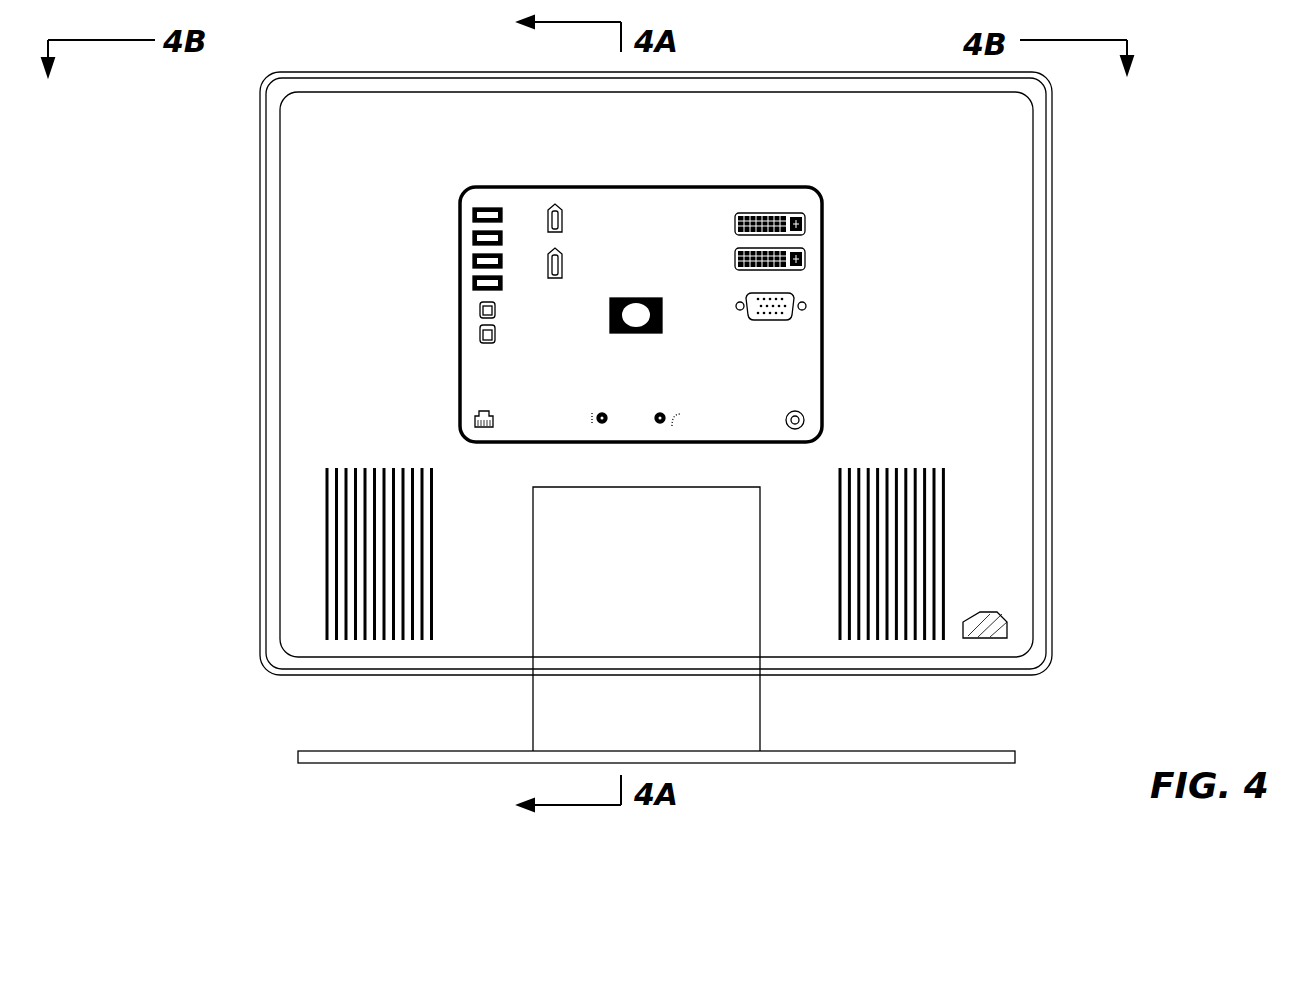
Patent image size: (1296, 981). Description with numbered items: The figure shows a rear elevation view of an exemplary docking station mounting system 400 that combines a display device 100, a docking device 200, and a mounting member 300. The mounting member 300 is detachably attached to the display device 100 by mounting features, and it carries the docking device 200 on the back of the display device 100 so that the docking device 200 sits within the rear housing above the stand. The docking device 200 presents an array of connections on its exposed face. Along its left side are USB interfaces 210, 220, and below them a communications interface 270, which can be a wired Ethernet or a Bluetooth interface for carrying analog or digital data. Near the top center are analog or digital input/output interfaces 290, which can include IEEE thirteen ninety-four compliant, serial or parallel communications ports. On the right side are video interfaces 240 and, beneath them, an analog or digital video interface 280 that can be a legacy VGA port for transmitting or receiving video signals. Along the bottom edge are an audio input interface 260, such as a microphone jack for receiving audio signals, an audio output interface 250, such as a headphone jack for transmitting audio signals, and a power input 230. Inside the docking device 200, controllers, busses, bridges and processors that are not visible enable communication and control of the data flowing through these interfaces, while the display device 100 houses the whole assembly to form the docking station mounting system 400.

The display device 100 is at (1058, 205).
The docking device 200 is at (540, 382).
The mounting member 300 is at (448, 185).
The USB interface 210 is at (472, 258).
The USB interface 220 is at (480, 310).
The power input 230 is at (805, 410).
The video interface 240 is at (800, 214).
The audio output interface 250 is at (664, 424).
The audio input interface 260 is at (598, 424).
The communications interface 270 is at (474, 418).
The analog or digital video interface 280 is at (808, 302).
The analog or digital input/output interface 290 is at (556, 204).
The docking station mounting system 400 is at (1165, 68).